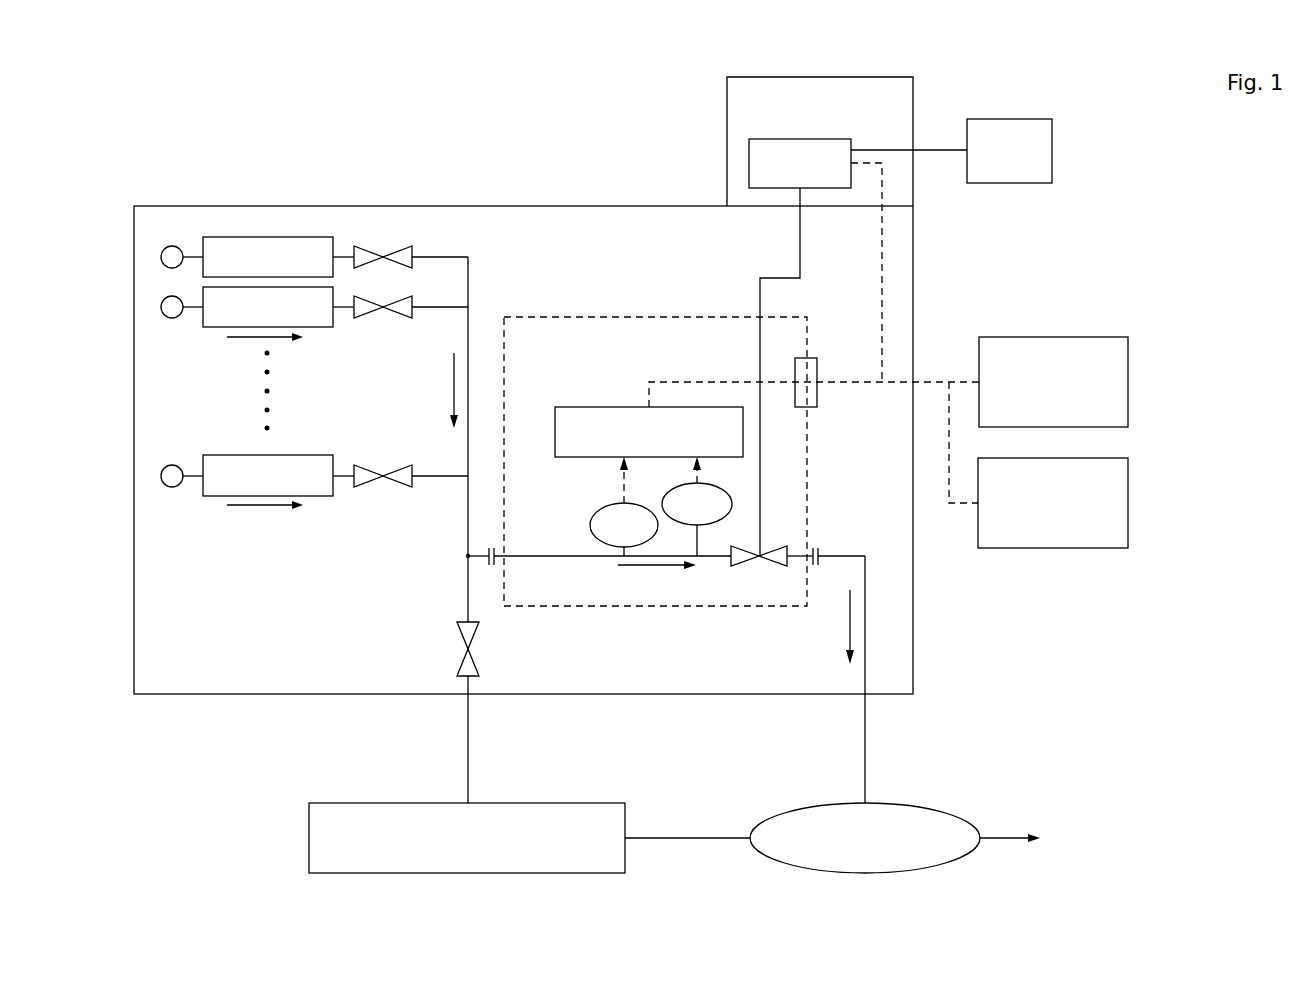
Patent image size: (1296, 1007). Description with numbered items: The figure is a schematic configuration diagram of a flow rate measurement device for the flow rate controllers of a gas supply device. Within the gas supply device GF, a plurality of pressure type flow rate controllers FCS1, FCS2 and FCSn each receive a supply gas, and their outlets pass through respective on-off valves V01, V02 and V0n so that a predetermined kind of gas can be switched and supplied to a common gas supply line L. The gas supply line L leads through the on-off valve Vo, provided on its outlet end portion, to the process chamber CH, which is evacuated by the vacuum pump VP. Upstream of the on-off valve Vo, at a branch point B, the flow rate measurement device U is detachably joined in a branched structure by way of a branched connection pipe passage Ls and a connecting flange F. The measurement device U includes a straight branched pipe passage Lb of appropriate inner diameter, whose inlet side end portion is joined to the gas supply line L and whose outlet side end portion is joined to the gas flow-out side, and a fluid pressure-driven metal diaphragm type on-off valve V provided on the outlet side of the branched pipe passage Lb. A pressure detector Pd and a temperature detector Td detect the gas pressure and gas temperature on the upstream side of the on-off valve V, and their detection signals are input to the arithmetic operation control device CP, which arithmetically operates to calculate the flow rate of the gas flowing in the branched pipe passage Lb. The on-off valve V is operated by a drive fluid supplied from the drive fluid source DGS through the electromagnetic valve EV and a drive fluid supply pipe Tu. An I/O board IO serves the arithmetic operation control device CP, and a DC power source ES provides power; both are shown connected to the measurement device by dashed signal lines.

The gas supply device GF is at (364, 704).
The flow rate controller FCS1 is at (257, 257).
The flow rate controller FCS2 is at (257, 314).
The flow rate controller FCSn is at (257, 482).
The on-off valve V01 is at (383, 257).
The on-off valve V02 is at (383, 307).
The on-off valve V0n is at (383, 476).
The gas supply line L is at (468, 597).
The branch point B is at (468, 556).
The on-off valve Vo is at (468, 649).
The branched connection pipe passage Ls is at (480, 552).
The branched pipe passage Lb is at (537, 552).
The connecting flange F is at (488, 566).
The on-off valve V is at (759, 566).
The drive fluid supply pipe Tu is at (800, 242).
The electromagnetic valve EV is at (805, 138).
The drive fluid source DGS is at (1052, 151).
The arithmetic operation control device CP is at (660, 432).
The flow rate measurement device U is at (598, 618).
The temperature detector Td is at (624, 506).
The pressure detector Pd is at (697, 506).
The I/O board IO is at (1128, 382).
The DC power source ES is at (1128, 503).
The process chamber CH is at (556, 803).
The vacuum pump VP is at (907, 803).